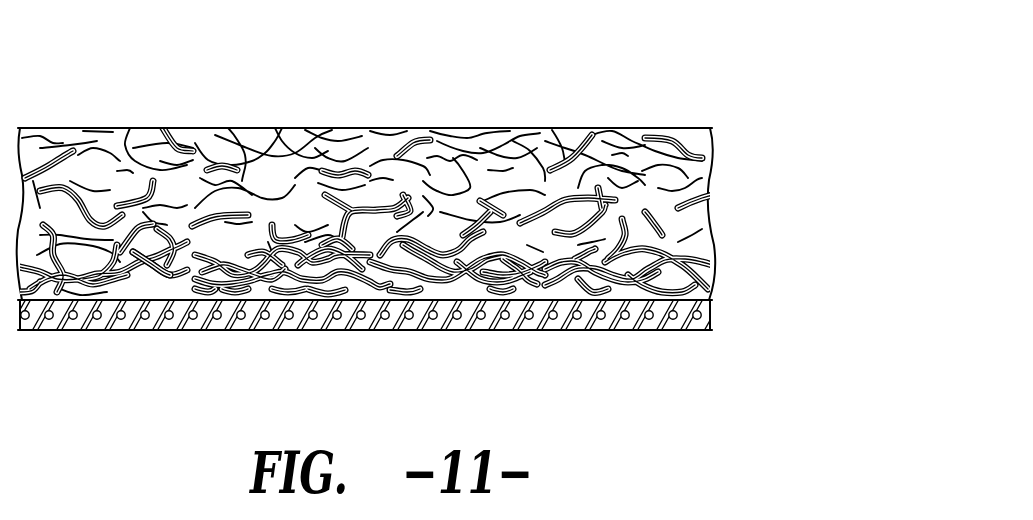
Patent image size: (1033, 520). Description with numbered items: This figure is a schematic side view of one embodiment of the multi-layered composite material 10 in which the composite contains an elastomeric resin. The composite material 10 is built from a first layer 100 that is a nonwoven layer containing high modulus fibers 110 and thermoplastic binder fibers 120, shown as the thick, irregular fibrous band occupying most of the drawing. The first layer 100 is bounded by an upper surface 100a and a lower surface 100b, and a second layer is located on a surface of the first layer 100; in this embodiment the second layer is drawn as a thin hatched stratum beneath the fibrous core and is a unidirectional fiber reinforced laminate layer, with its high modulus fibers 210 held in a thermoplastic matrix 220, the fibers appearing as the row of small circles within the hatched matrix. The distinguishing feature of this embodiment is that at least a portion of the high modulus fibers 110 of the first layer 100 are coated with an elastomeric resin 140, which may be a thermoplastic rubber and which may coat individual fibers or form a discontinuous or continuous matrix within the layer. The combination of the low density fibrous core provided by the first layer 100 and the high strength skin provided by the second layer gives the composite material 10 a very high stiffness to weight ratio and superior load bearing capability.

The multi-layered composite material 10 is at (572, 90).
The first layer 100 is at (743, 128).
The upper surface 100a is at (712, 302).
The lower surface 100b is at (710, 128).
The high modulus fibers 110 is at (110, 273).
The thermoplastic binder fibers 120 is at (313, 133).
The elastomeric resin 140 is at (142, 270).
The high modulus fibers 210 is at (368, 312).
The thermoplastic matrix 220 is at (587, 323).